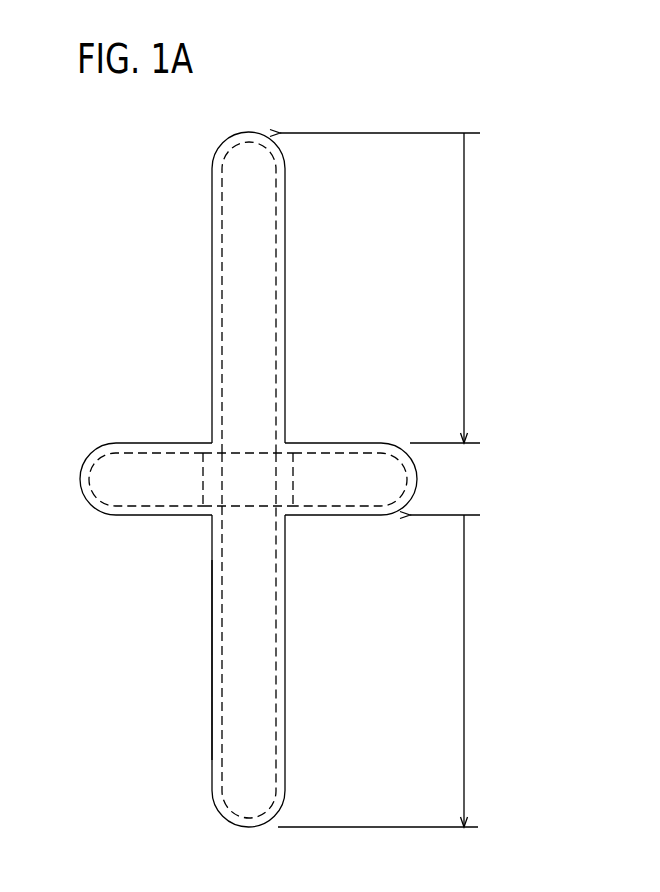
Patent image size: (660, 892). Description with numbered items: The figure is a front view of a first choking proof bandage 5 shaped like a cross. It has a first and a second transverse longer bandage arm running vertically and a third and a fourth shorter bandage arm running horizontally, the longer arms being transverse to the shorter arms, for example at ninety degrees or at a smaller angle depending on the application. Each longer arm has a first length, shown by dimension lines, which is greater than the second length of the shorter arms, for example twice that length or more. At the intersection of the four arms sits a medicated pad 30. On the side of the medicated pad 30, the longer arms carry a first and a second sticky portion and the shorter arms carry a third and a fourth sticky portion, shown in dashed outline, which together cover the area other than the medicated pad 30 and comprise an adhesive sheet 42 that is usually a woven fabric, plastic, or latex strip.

The first choking proof bandage 5 is at (178, 175).
The medicated pad 30 is at (248, 508).
The adhesive sheet 42 is at (190, 705).